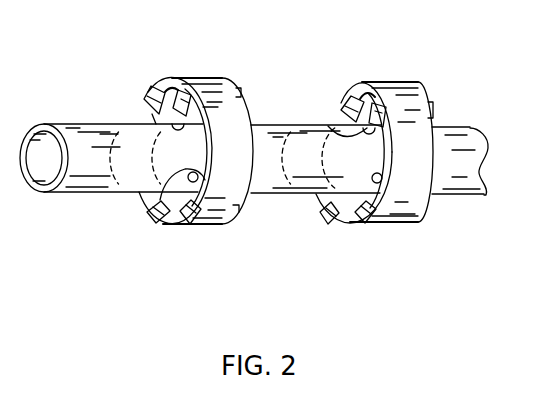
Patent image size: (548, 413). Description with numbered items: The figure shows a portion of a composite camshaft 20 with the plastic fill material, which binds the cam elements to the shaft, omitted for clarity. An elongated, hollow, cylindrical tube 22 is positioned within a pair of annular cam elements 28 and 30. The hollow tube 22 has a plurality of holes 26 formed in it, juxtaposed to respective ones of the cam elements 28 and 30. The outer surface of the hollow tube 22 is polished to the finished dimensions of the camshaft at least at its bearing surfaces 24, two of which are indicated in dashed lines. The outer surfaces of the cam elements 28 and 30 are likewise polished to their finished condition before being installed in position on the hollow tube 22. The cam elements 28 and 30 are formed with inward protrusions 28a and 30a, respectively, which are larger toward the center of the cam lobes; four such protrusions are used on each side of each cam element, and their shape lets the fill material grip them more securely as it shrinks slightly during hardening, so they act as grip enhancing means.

The composite camshaft 20 is at (291, 36).
The hollow tube 22 is at (30, 124).
The bearing surfaces 24 is at (114, 122).
The holes 26 is at (328, 126).
The cam element 28 is at (198, 78).
The inward protrusions 28a is at (146, 101).
The cam element 30 is at (385, 80).
The inward protrusions 30a is at (347, 99).